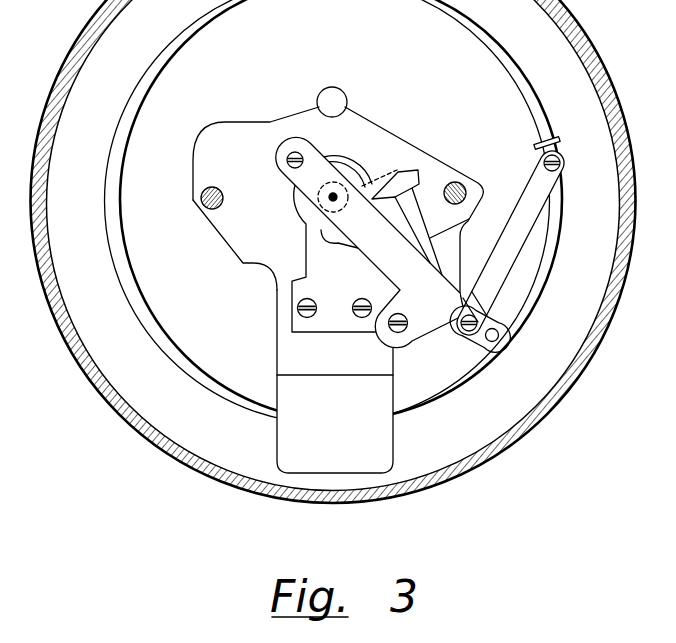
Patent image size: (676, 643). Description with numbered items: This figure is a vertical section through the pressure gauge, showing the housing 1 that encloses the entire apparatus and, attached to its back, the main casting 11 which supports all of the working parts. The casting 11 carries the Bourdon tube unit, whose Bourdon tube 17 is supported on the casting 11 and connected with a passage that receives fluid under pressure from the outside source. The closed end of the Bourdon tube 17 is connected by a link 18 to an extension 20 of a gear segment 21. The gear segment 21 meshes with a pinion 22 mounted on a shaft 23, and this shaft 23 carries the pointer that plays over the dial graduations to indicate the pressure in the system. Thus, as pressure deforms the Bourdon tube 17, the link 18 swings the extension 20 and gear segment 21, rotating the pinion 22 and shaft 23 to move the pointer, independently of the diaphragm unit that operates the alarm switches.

The housing 1 is at (574, 369).
The main casting 11 is at (345, 439).
The Bourdon tube 17 is at (143, 323).
The link 18 is at (537, 208).
The extension 20 is at (500, 323).
The gear segment 21 is at (405, 184).
The pinion 22 is at (322, 222).
The shaft 23 is at (318, 162).